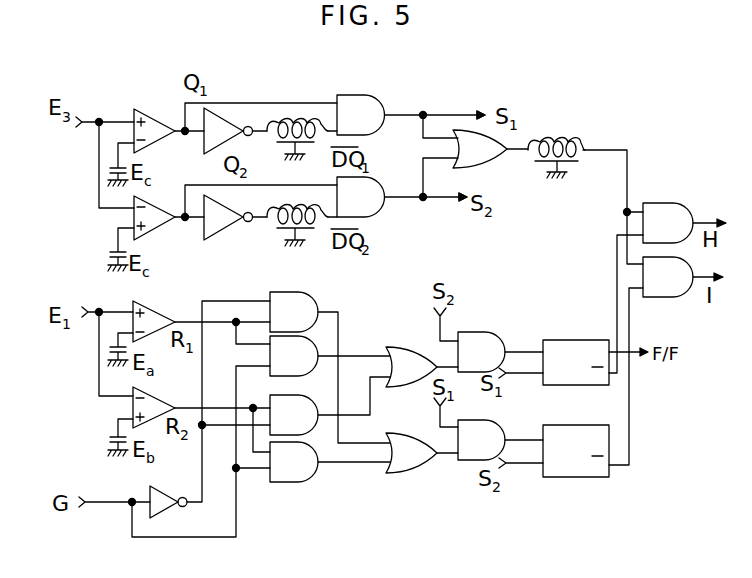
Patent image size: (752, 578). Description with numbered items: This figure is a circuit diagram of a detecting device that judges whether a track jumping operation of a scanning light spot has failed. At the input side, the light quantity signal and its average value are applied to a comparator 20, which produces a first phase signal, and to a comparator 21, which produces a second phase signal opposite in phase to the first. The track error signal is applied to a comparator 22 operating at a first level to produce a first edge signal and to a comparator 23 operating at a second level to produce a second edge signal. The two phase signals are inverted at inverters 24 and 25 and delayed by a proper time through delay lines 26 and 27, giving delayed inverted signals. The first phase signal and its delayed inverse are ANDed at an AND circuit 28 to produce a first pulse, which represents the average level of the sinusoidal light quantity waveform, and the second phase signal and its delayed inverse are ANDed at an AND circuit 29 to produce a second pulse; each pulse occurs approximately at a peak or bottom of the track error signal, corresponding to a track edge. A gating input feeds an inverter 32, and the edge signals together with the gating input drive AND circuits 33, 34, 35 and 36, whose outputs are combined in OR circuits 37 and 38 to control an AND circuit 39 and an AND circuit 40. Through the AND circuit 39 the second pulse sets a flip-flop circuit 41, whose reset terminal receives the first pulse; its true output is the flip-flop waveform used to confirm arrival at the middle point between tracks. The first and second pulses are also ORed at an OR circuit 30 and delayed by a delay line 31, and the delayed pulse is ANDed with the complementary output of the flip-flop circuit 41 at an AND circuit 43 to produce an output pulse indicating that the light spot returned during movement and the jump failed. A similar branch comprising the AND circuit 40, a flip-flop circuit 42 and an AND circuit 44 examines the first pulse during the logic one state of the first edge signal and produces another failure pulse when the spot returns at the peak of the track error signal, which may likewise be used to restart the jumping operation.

The comparator 20 is at (139, 109).
The comparator 21 is at (140, 203).
The comparator 22 is at (147, 303).
The comparator 23 is at (150, 390).
The inverter 24 is at (218, 108).
The inverter 25 is at (229, 229).
The delay line 26 is at (290, 121).
The delay line 27 is at (298, 206).
The AND circuit 28 is at (350, 95).
The AND circuit 29 is at (368, 178).
The OR circuit 30 is at (504, 153).
The delay line 31 is at (546, 142).
The inverter 32 is at (157, 488).
The AND circuit 33 is at (291, 292).
The AND circuit 34 is at (320, 349).
The AND circuit 35 is at (294, 395).
The AND circuit 36 is at (296, 482).
The OR circuit 37 is at (398, 349).
The OR circuit 38 is at (398, 437).
The AND circuit 39 is at (469, 333).
The AND circuit 40 is at (472, 421).
The flip-flop circuit 41 is at (565, 340).
The flip-flop circuit 42 is at (568, 425).
The AND circuit 43 is at (669, 203).
The AND circuit 44 is at (657, 297).